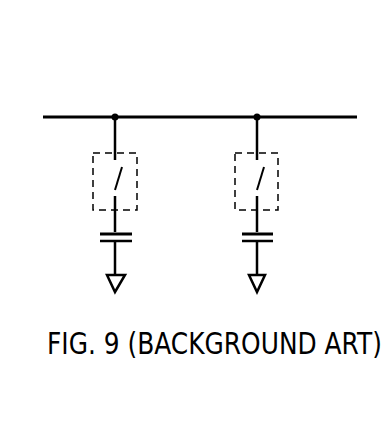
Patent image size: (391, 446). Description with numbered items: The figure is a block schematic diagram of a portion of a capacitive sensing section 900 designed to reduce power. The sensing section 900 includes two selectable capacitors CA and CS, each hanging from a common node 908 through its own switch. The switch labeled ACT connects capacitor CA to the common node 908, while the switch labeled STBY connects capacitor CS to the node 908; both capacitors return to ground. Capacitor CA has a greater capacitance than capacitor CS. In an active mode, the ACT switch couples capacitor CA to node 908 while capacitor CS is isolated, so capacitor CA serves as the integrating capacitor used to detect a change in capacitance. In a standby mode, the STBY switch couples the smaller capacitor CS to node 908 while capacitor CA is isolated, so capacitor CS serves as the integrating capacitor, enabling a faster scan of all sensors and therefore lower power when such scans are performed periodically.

The sensing section 900 is at (195, 148).
The common node 908 is at (145, 117).
The active mode switch control ACT is at (93, 189).
The standby mode switch control STBY is at (278, 182).
The active-mode integrating capacitor CA is at (130, 263).
The standby-mode integrating capacitor CS is at (280, 263).